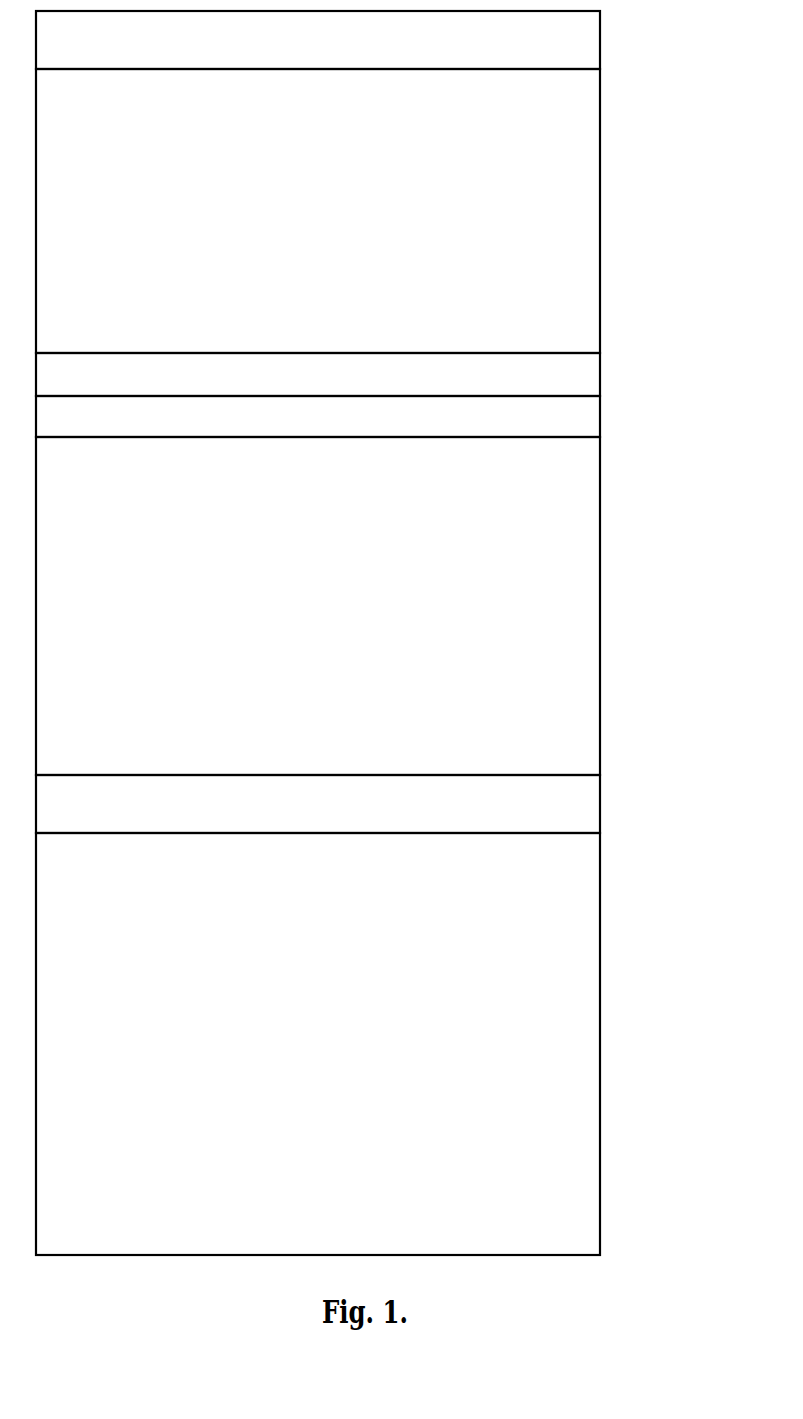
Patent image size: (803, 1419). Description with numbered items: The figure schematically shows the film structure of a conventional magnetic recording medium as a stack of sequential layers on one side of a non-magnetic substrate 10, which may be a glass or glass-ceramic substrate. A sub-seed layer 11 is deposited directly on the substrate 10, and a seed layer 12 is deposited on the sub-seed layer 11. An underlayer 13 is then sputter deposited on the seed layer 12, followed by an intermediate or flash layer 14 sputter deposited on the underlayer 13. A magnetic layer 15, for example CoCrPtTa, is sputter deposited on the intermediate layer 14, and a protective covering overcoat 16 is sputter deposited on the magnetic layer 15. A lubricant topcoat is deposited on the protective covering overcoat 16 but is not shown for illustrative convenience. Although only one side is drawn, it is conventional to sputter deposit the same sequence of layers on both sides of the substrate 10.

The non-magnetic substrate 10 is at (620, 1045).
The sub-seed layer 11 is at (620, 796).
The seed layer 12 is at (620, 613).
The underlayer 13 is at (620, 416).
The intermediate or flash layer 14 is at (620, 373).
The magnetic layer 15 is at (620, 205).
The protective covering overcoat 16 is at (620, 31).